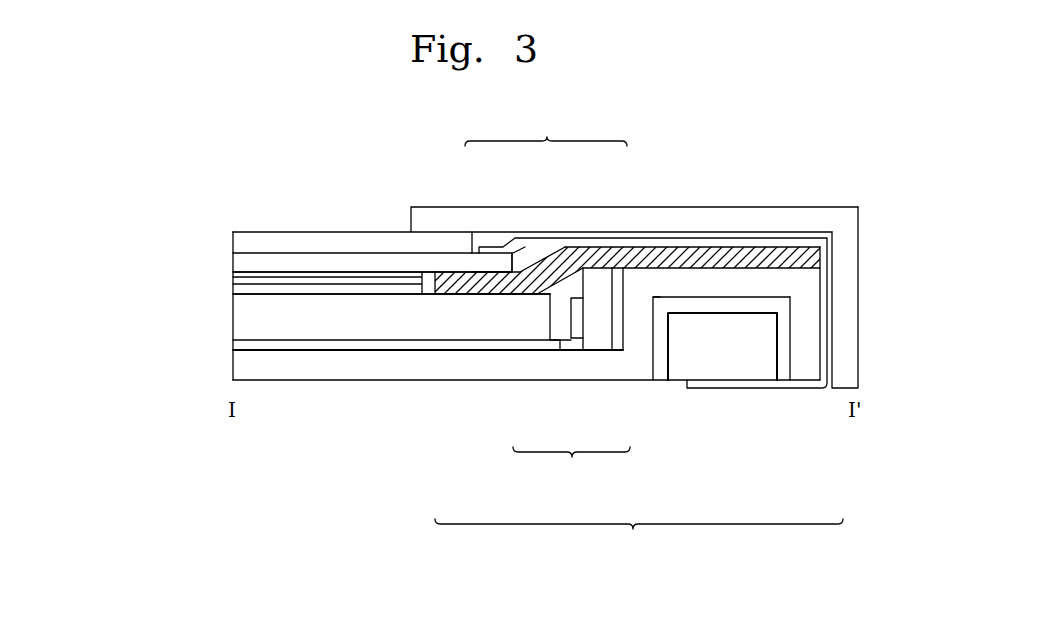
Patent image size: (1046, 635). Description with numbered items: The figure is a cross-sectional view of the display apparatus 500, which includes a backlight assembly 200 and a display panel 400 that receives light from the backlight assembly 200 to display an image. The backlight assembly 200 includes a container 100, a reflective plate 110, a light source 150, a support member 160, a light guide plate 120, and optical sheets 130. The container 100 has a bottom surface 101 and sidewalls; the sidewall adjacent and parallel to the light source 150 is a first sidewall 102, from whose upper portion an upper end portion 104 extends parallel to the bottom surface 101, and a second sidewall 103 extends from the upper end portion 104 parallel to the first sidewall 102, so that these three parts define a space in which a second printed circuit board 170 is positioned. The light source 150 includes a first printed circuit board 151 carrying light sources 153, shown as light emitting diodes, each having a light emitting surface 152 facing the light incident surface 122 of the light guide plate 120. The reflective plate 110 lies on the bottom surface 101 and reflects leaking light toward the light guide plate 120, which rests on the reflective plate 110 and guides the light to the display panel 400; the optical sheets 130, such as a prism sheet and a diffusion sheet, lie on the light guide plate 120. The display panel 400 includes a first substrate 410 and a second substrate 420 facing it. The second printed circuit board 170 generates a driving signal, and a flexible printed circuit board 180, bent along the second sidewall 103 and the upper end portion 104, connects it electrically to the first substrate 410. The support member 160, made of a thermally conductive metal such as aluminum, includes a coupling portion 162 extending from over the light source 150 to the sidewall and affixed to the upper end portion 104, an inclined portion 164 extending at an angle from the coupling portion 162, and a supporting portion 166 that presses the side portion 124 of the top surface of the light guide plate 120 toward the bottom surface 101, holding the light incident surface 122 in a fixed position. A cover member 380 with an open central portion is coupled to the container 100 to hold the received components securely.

The container 100 is at (538, 411).
The bottom surface 101 is at (435, 372).
The first sidewall 102 is at (647, 332).
The second sidewall 103 is at (808, 370).
The upper end portion 104 is at (700, 287).
The reflective plate 110 is at (235, 343).
The light guide plate 120 is at (235, 317).
The light incident surface 122 is at (550, 301).
The side portion 124 is at (447, 294).
The optical sheets 130 is at (229, 285).
The light source 150 is at (571, 464).
The first printed circuit board 151 is at (598, 342).
The light emitting surface 152 is at (572, 332).
The light sources 153 is at (577, 313).
The support member 160 is at (546, 129).
The coupling portion 162 is at (620, 248).
The inclined portion 164 is at (556, 262).
The supporting portion 166 is at (493, 262).
The second printed circuit board 170 is at (725, 372).
The flexible printed circuit board 180 is at (741, 243).
The backlight assembly 200 is at (120, 275).
The cover member 380 is at (683, 215).
The display panel 400 is at (168, 223).
The first substrate 410 is at (233, 266).
The second substrate 420 is at (233, 242).
The display apparatus 500 is at (800, 188).